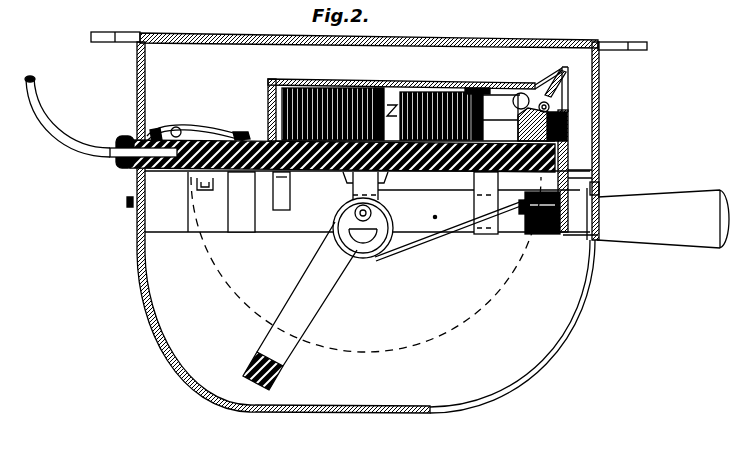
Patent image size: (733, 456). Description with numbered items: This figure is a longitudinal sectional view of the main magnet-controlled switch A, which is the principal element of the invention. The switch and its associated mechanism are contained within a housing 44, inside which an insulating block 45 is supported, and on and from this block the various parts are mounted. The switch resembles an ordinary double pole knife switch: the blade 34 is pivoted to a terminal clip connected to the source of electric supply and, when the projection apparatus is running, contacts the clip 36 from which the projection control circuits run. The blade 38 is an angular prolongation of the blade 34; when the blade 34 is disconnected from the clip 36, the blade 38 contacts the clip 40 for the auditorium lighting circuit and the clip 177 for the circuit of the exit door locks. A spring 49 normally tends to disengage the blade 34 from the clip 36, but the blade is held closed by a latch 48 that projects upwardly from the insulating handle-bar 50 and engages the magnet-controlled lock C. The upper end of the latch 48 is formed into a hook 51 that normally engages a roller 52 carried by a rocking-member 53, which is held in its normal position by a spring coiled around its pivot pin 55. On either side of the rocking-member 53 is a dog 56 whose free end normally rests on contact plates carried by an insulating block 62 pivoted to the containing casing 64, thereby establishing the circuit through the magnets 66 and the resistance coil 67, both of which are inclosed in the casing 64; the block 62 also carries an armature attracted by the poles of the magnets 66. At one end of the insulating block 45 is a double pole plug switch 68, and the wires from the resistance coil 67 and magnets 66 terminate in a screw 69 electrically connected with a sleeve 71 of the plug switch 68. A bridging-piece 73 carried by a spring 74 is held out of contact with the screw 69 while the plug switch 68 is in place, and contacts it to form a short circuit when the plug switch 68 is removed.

The housing 44 is at (155, 322).
The insulating block 45 is at (407, 175).
The double pole plug switch 68 is at (118, 167).
The sleeve 71 is at (154, 171).
The bridging-piece 73 is at (178, 132).
The screw 69 is at (183, 131).
The spring 74 is at (222, 134).
The containing casing 64 is at (374, 86).
The resistance coil 67 is at (328, 95).
The magnets 66 is at (430, 90).
The insulating block 62 is at (480, 90).
The dog 56 is at (499, 128).
The pivot pin 55 is at (527, 100).
The hook 51 is at (477, 133).
The roller 52 is at (566, 137).
The latch 48 is at (566, 165).
The rocking-member 53 is at (566, 188).
The clip 40 is at (247, 208).
The clip 177 is at (283, 193).
The blade 34 is at (435, 218).
The clip 36 is at (488, 238).
The blade 38 is at (326, 296).
The spring 49 is at (398, 247).
The insulating handle-bar 50 is at (553, 234).
The main magnet-controlled switch A is at (366, 264).
The magnet-controlled lock C is at (558, 72).